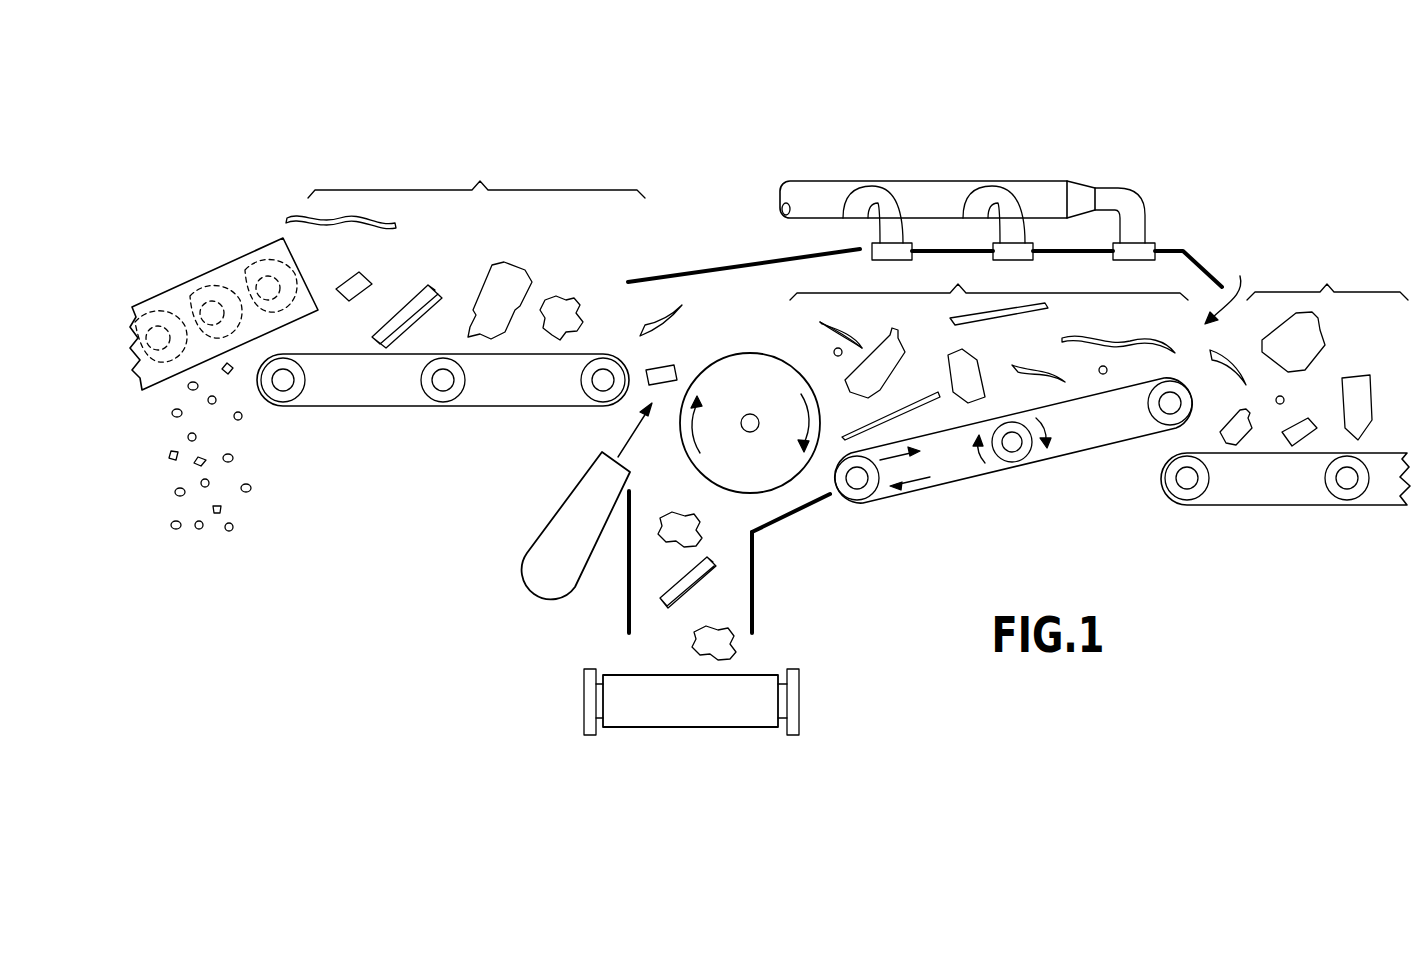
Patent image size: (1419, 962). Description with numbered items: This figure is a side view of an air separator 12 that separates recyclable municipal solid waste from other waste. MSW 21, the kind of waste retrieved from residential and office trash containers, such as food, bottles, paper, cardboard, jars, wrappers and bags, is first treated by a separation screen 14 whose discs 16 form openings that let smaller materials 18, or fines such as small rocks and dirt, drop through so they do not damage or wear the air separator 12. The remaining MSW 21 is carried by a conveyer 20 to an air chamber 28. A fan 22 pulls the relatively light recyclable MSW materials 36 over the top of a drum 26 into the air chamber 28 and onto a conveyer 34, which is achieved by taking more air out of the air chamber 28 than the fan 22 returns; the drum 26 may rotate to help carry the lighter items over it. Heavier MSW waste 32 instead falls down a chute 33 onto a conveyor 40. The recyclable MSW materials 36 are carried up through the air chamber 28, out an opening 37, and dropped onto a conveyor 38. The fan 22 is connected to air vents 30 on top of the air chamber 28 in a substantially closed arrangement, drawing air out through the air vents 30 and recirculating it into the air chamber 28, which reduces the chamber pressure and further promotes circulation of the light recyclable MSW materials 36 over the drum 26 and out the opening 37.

The air separator 12 is at (558, 86).
The separation screen 14 is at (209, 270).
The discs 16 is at (160, 308).
The smaller materials 18 is at (252, 488).
The conveyer 20 is at (374, 406).
The MSW 21 is at (484, 253).
The fan 22 is at (522, 570).
The drum 26 is at (766, 468).
The air chamber 28 is at (750, 282).
The air vents 30 is at (930, 181).
The heavier MSW waste 32 is at (672, 510).
The chute 33 is at (648, 578).
The conveyer 34 is at (955, 482).
The recyclable MSW materials 36 is at (1099, 350).
The opening 37 is at (1229, 286).
The conveyor 38 is at (1295, 506).
The conveyor 40 is at (690, 727).